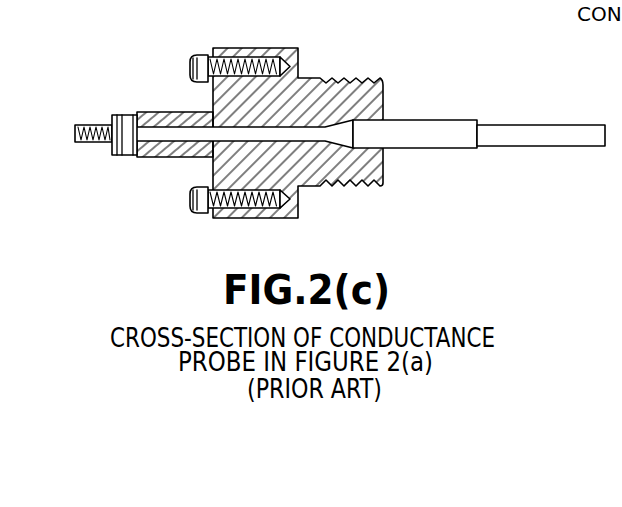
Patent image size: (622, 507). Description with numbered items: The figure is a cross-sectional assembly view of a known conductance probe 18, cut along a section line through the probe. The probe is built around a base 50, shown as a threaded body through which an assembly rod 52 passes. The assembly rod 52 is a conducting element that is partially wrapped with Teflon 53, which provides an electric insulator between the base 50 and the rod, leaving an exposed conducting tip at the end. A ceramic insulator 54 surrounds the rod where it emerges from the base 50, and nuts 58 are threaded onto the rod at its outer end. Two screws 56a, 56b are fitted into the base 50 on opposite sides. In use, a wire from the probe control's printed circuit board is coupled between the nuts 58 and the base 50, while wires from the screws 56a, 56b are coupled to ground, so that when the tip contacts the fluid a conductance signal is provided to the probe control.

The conductance probe 18 is at (340, 137).
The base 50 is at (341, 168).
The assembly rod 52 is at (575, 149).
The Teflon 53 is at (425, 149).
The ceramic insulator 54 is at (147, 112).
The screw 56a is at (198, 56).
The screw 56b is at (200, 214).
The nuts 58 is at (114, 156).